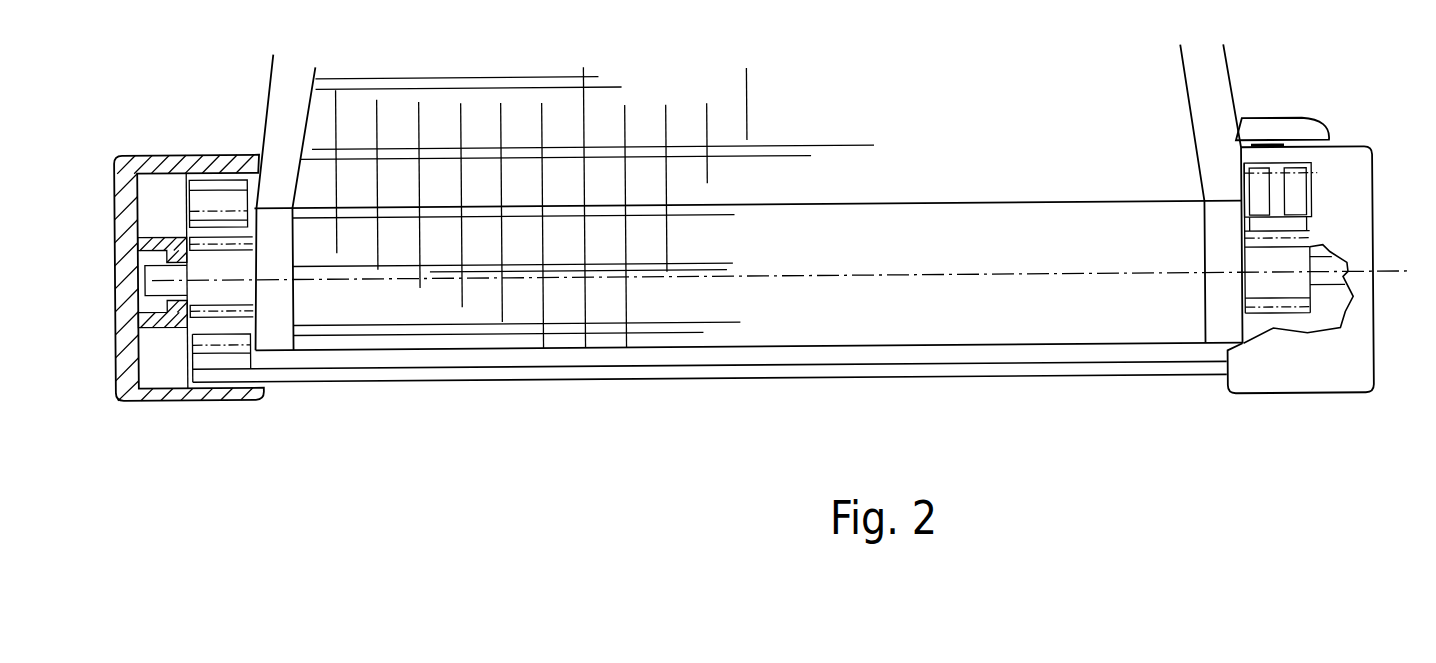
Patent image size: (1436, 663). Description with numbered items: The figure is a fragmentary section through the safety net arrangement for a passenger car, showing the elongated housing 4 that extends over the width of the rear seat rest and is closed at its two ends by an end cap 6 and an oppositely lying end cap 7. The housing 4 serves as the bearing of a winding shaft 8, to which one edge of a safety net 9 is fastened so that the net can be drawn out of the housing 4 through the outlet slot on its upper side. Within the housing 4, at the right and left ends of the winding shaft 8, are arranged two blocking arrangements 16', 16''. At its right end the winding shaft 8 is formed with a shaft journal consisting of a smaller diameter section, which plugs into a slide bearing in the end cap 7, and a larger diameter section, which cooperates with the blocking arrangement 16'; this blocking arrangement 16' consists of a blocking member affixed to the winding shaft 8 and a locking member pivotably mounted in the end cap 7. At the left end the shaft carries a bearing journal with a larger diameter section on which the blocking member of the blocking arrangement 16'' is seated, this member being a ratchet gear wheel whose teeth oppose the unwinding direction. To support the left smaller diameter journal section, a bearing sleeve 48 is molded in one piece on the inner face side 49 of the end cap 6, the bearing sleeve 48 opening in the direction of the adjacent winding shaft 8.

The housing 4 is at (646, 390).
The end cap 6 is at (152, 160).
The end cap 7 is at (1352, 193).
The winding shaft 8 is at (1218, 322).
The safety net 9 is at (367, 97).
The blocking arrangement 16' is at (1339, 293).
The blocking arrangement 16'' is at (209, 338).
The bearing sleeve 48 is at (152, 233).
The inner face side 49 is at (123, 150).